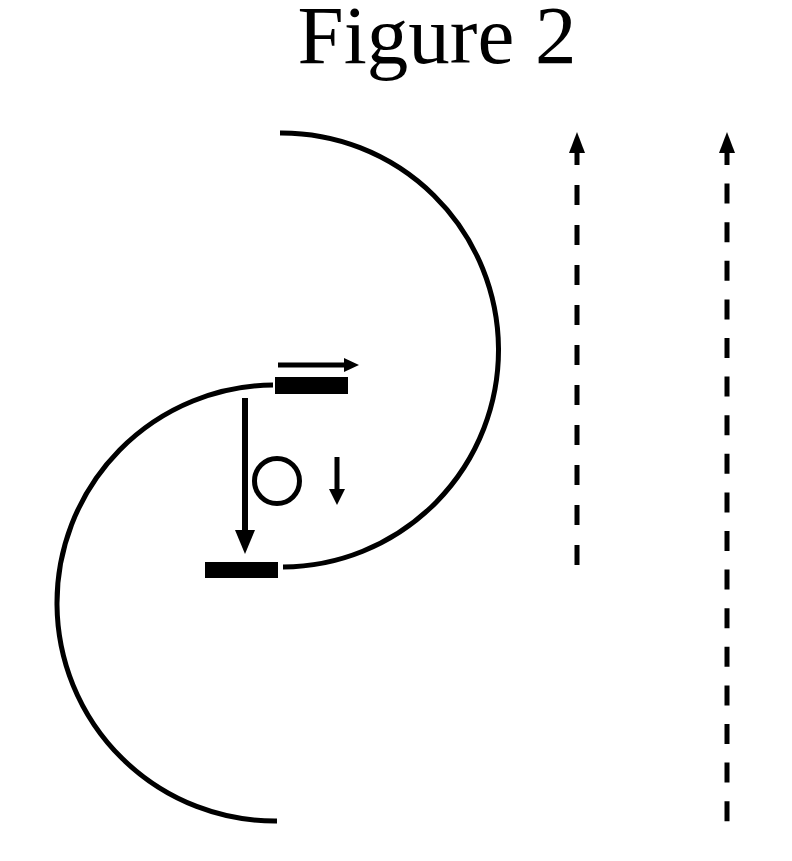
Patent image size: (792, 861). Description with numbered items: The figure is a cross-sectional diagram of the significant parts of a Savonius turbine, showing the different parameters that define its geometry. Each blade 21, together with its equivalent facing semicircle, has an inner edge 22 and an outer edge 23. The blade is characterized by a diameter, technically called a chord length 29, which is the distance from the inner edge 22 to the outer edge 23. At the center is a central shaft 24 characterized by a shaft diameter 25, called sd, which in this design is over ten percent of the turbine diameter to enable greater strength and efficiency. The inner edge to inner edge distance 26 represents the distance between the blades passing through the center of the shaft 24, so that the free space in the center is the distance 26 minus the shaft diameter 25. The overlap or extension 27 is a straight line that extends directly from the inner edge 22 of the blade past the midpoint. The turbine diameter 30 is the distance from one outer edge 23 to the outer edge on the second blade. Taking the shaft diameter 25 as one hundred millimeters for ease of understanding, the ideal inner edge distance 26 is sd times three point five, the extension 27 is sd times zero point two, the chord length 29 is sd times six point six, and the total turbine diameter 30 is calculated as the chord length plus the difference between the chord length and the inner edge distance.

The blade 21 is at (413, 350).
The inner edge 22 is at (256, 586).
The outer edge 23 is at (178, 484).
The central shaft 24 is at (277, 481).
The shaft diameter 25 is at (354, 481).
The inner edge to inner edge distance 26 is at (217, 476).
The overlap extension 27 is at (317, 358).
The chord length 29 is at (599, 349).
The turbine diameter 30 is at (745, 478).